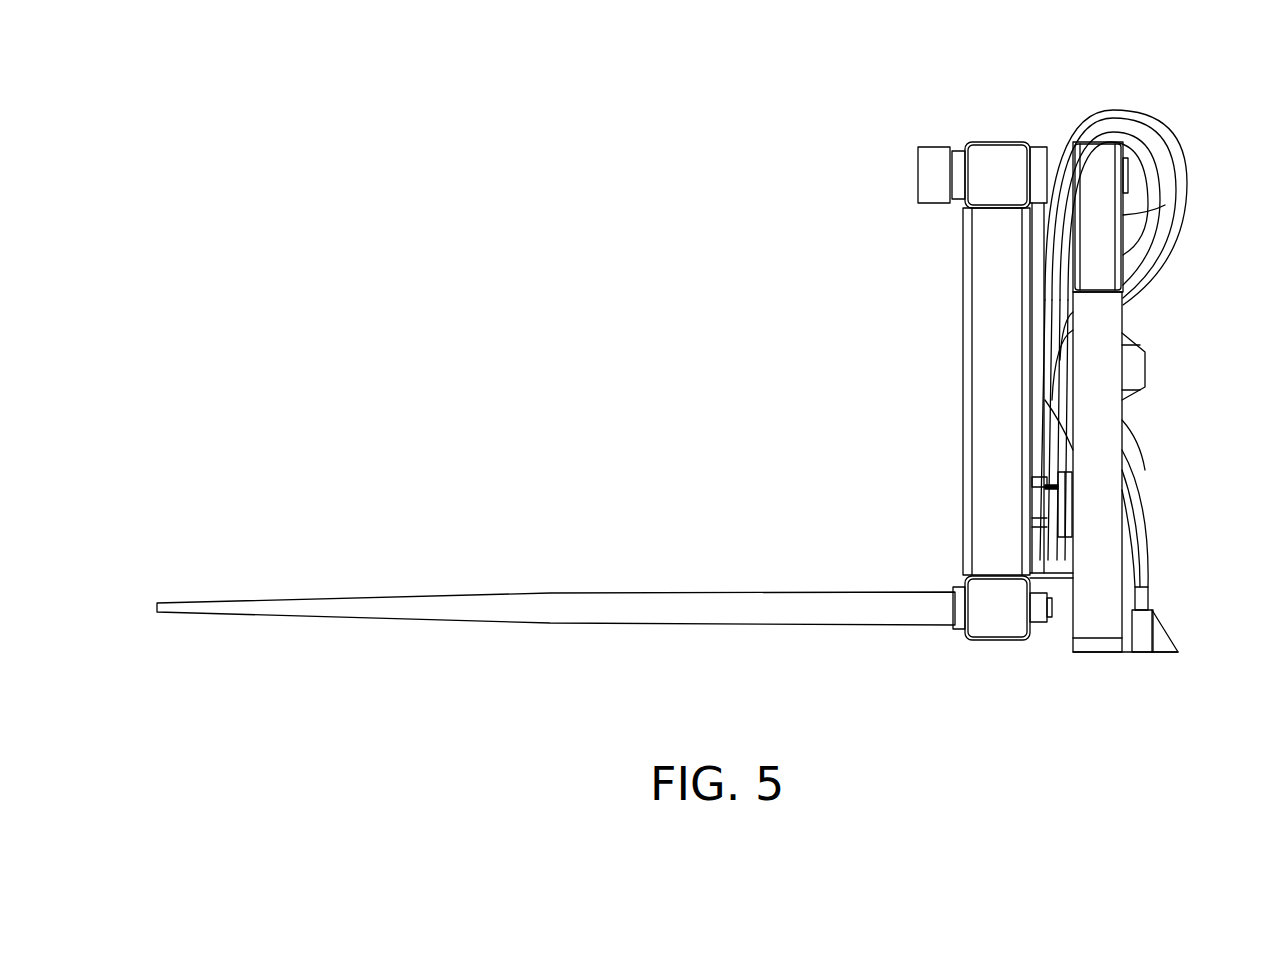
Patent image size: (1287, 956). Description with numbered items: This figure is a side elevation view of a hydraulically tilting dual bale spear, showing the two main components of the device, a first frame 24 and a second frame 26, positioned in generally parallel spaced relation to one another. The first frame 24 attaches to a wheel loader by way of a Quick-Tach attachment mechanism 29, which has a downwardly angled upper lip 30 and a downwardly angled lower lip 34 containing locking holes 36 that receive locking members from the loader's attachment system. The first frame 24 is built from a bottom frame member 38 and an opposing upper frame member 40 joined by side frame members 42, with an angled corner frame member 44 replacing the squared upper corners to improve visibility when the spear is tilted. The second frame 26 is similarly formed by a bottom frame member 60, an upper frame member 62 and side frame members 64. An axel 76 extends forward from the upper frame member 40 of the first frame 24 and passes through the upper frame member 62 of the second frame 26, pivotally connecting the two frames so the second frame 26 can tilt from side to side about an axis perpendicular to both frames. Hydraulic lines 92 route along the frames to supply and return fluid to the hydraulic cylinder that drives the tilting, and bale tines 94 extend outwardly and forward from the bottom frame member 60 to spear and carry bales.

The first frame 24 is at (1101, 125).
The second frame 26 is at (975, 128).
The Quick-Tach attachment mechanism 29 is at (1165, 353).
The upper lip 30 is at (1147, 362).
The lower lip 34 is at (1160, 652).
The locking holes 36 is at (1158, 633).
The bottom frame member 38 is at (1100, 652).
The upper frame member 40 is at (1115, 148).
The side frame members 42 is at (1123, 440).
The corner frame member 44 is at (1125, 215).
The bottom frame member 60 is at (997, 642).
The upper frame member 62 is at (998, 142).
The side frame members 64 is at (963, 290).
The axel 76 is at (1043, 147).
The hydraulic lines 92 is at (1188, 158).
The bale tines 94 is at (505, 590).